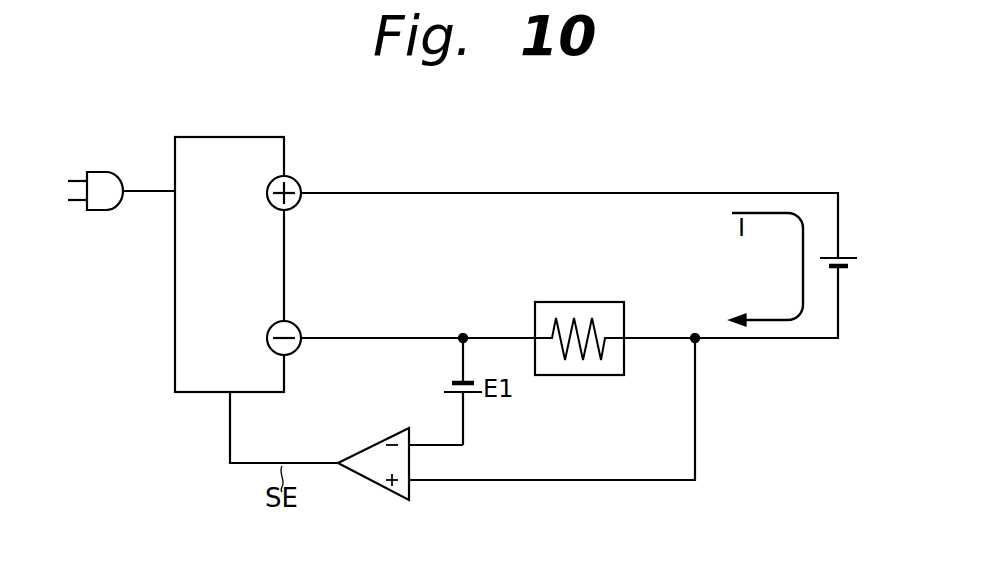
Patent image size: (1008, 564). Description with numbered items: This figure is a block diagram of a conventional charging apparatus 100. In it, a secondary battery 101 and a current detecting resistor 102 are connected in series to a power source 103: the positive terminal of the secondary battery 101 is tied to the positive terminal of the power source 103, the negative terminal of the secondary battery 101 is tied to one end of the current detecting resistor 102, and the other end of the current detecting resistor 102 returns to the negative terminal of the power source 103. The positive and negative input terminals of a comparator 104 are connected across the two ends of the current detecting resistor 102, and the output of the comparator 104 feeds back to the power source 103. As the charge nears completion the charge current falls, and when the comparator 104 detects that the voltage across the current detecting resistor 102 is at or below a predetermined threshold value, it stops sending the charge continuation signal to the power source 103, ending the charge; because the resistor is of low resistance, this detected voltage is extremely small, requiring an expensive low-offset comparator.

The charging apparatus 100 is at (528, 184).
The secondary battery 101 is at (845, 258).
The current detecting resistor 102 is at (580, 302).
The power source 103 is at (228, 137).
The comparator 104 is at (372, 444).